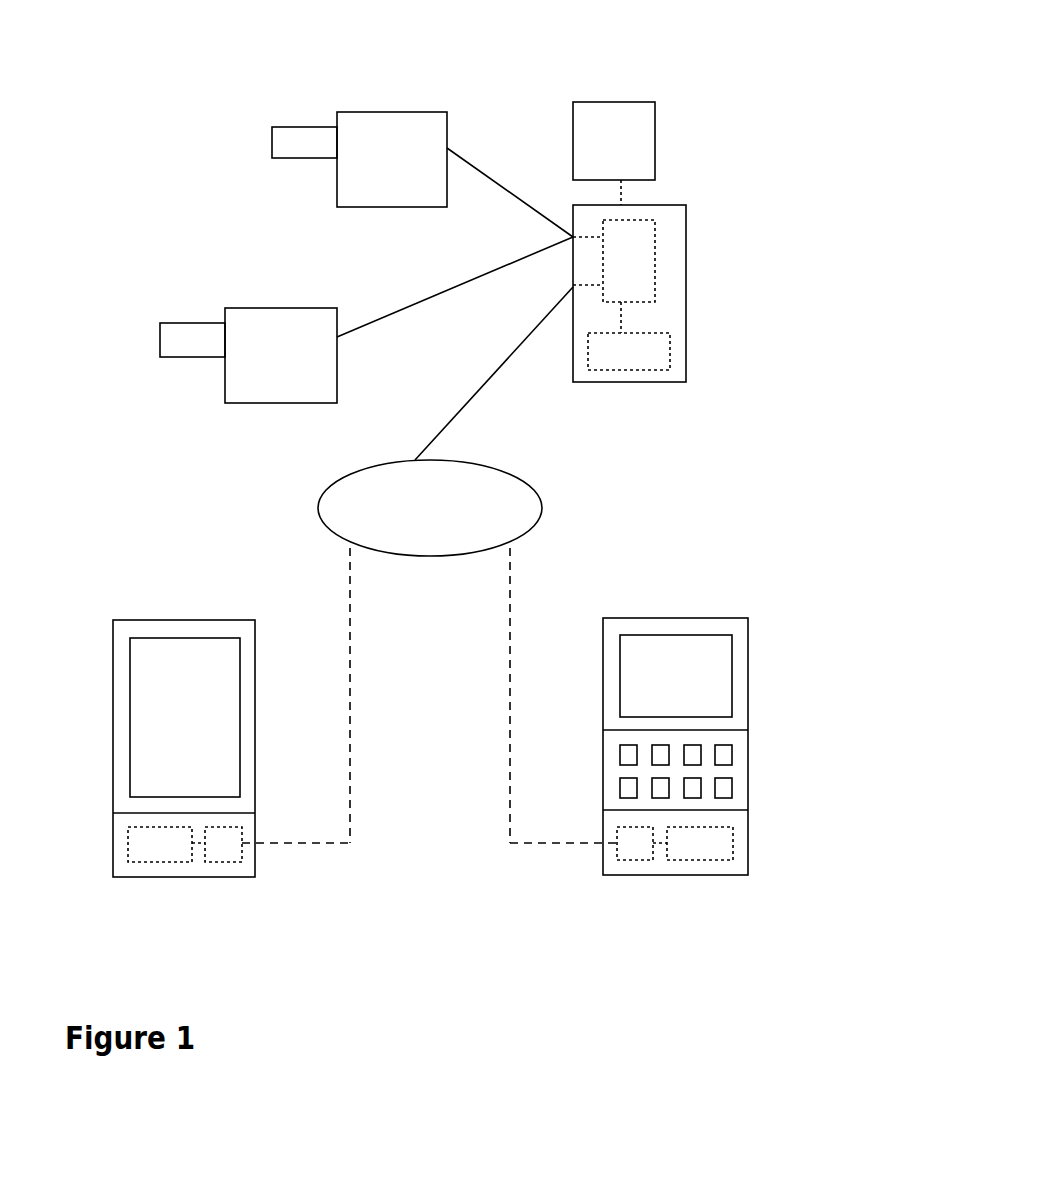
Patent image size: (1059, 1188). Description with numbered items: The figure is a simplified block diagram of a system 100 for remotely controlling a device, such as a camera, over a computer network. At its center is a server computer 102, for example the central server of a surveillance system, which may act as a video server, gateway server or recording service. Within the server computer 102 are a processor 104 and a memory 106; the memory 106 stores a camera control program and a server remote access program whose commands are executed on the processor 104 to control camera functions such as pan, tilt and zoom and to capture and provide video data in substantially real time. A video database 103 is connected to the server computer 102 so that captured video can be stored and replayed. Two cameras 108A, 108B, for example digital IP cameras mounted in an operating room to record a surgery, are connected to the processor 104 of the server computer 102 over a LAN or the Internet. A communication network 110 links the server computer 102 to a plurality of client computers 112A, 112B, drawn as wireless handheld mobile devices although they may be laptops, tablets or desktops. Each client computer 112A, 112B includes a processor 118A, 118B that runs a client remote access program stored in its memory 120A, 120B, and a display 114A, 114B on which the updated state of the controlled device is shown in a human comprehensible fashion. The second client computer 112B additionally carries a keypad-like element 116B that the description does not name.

The system 100 is at (750, 82).
The server computer 102 is at (687, 227).
The video database 103 is at (605, 132).
The processor 104 is at (620, 275).
The memory 106 is at (635, 355).
The camera 108A is at (385, 132).
The camera 108B is at (288, 325).
The communication network 110 is at (463, 513).
The client computer 112A is at (113, 658).
The client computer 112B is at (730, 627).
The display 114A is at (177, 723).
The display 114B is at (683, 675).
The keypad 116B is at (717, 770).
The processor 118A is at (223, 850).
The processor 118B is at (637, 847).
The memory 120A is at (160, 850).
The memory 120B is at (698, 847).